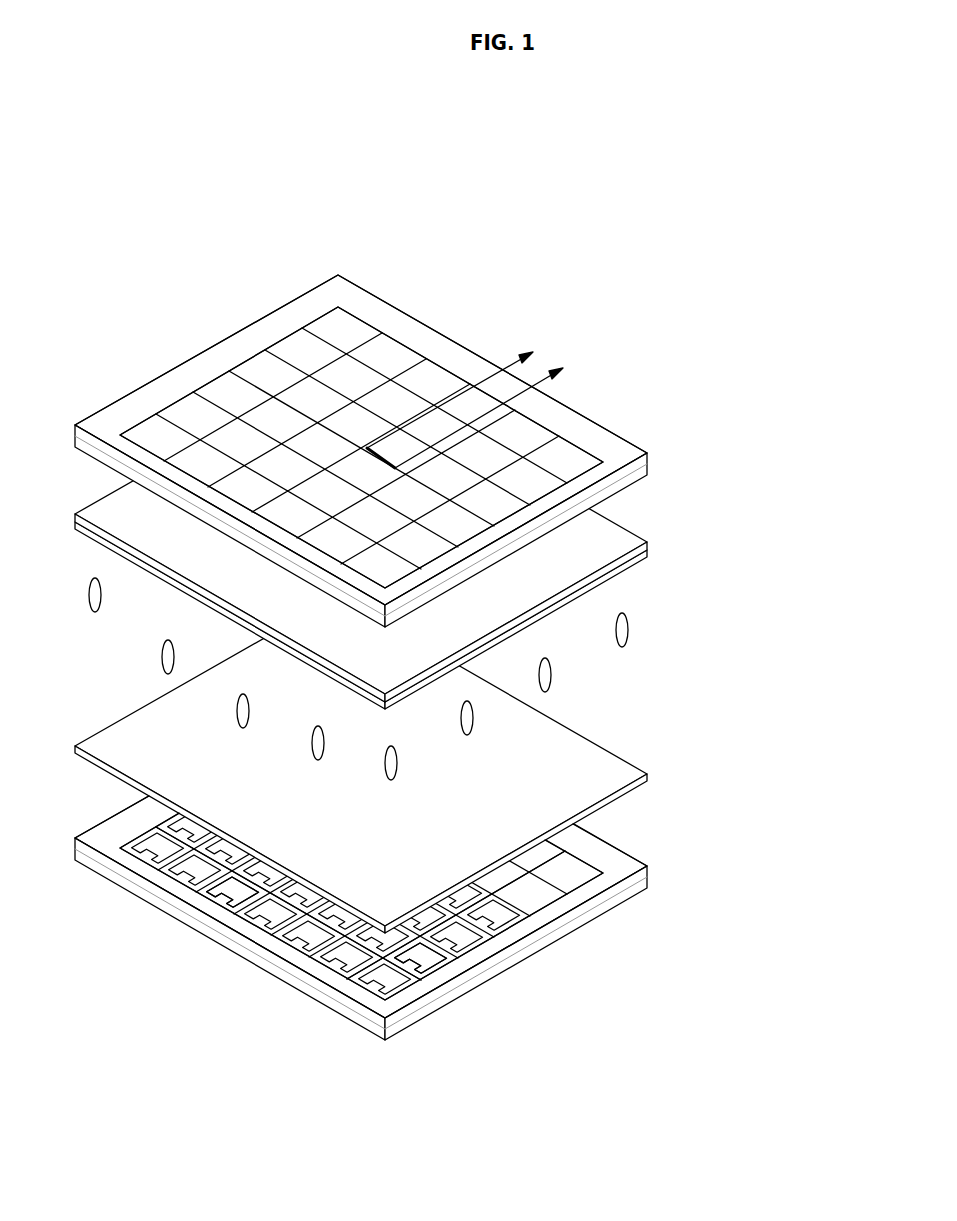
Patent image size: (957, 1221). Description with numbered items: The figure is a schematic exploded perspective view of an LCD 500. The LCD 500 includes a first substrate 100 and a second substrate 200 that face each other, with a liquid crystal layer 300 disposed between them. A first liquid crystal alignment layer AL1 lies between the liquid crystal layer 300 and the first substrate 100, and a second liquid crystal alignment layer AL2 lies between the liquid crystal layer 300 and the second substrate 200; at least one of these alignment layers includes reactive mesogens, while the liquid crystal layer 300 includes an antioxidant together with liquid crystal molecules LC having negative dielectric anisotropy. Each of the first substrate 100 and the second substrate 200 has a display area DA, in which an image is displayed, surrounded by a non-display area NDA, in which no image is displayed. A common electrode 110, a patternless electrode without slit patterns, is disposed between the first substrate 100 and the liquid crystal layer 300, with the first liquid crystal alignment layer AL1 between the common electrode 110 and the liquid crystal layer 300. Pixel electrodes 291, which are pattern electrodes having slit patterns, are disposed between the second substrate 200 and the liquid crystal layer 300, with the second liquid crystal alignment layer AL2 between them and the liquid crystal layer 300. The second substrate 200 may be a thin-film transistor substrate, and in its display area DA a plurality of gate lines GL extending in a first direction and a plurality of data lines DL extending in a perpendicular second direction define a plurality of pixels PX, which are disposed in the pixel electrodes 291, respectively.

The LCD 500 is at (467, 135).
The first substrate 100 is at (647, 465).
The common electrode 110 is at (647, 542).
The first liquid crystal alignment layer AL1 is at (647, 553).
The liquid crystal layer 300 is at (662, 618).
The liquid crystal molecules LC is at (630, 636).
The second liquid crystal alignment layer AL2 is at (647, 774).
The second substrate 200 is at (647, 872).
The pixel electrodes 291 is at (460, 940).
The display area DA is at (553, 445).
The non-display area NDA is at (608, 450).
The pixels PX is at (270, 928).
The data lines DL is at (337, 972).
The gate lines GL is at (412, 977).